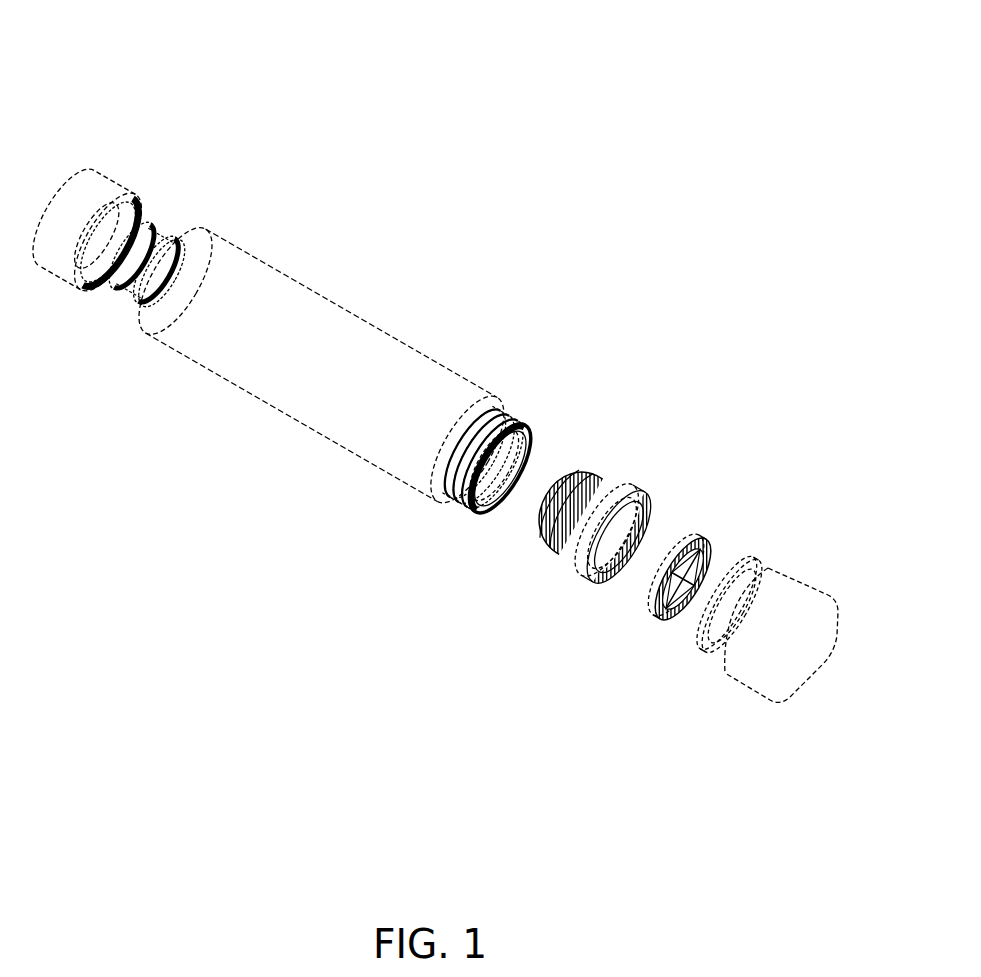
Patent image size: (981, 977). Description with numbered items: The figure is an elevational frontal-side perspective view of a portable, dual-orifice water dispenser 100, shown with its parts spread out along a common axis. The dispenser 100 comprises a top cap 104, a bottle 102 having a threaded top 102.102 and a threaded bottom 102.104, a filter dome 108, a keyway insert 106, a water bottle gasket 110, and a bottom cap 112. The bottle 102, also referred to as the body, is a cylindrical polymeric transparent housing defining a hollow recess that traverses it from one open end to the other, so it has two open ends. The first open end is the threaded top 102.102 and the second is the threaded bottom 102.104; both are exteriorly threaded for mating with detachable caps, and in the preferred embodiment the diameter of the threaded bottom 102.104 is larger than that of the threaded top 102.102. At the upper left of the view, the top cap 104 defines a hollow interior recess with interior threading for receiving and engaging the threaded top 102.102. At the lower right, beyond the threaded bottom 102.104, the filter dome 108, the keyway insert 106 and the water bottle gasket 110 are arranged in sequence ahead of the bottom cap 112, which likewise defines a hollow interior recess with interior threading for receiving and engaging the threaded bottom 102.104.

The portable dual-orifice water dispenser 100 is at (112, 76).
The bottle 102 is at (428, 547).
The threaded top 102.102 is at (160, 245).
The threaded bottom 102.104 is at (508, 423).
The top cap 104 is at (98, 188).
The keyway insert 106 is at (657, 610).
The filter dome 108 is at (595, 483).
The water bottle gasket 110 is at (703, 642).
The bottom cap 112 is at (768, 682).